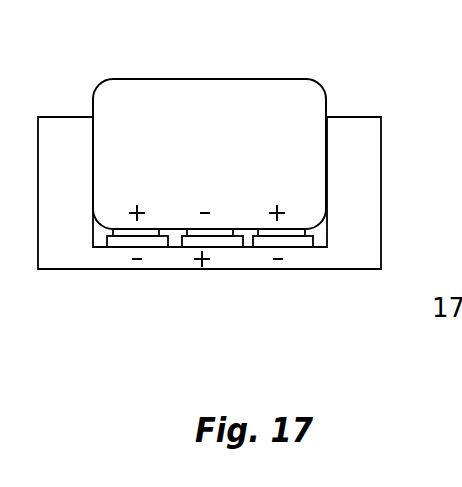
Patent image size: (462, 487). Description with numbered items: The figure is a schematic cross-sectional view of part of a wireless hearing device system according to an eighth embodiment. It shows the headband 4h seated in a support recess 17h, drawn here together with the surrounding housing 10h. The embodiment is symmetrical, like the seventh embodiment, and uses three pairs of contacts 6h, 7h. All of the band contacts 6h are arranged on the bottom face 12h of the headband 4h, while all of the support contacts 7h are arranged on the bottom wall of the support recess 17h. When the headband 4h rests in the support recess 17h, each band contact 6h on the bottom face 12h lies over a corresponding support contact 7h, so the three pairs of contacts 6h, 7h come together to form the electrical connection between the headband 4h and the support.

The headband 4h is at (192, 113).
The band contacts 6h is at (150, 229).
The support contacts 7h is at (152, 237).
The housing 10h is at (362, 203).
The bottom face 12h is at (247, 248).
The support recess 17h is at (98, 243).